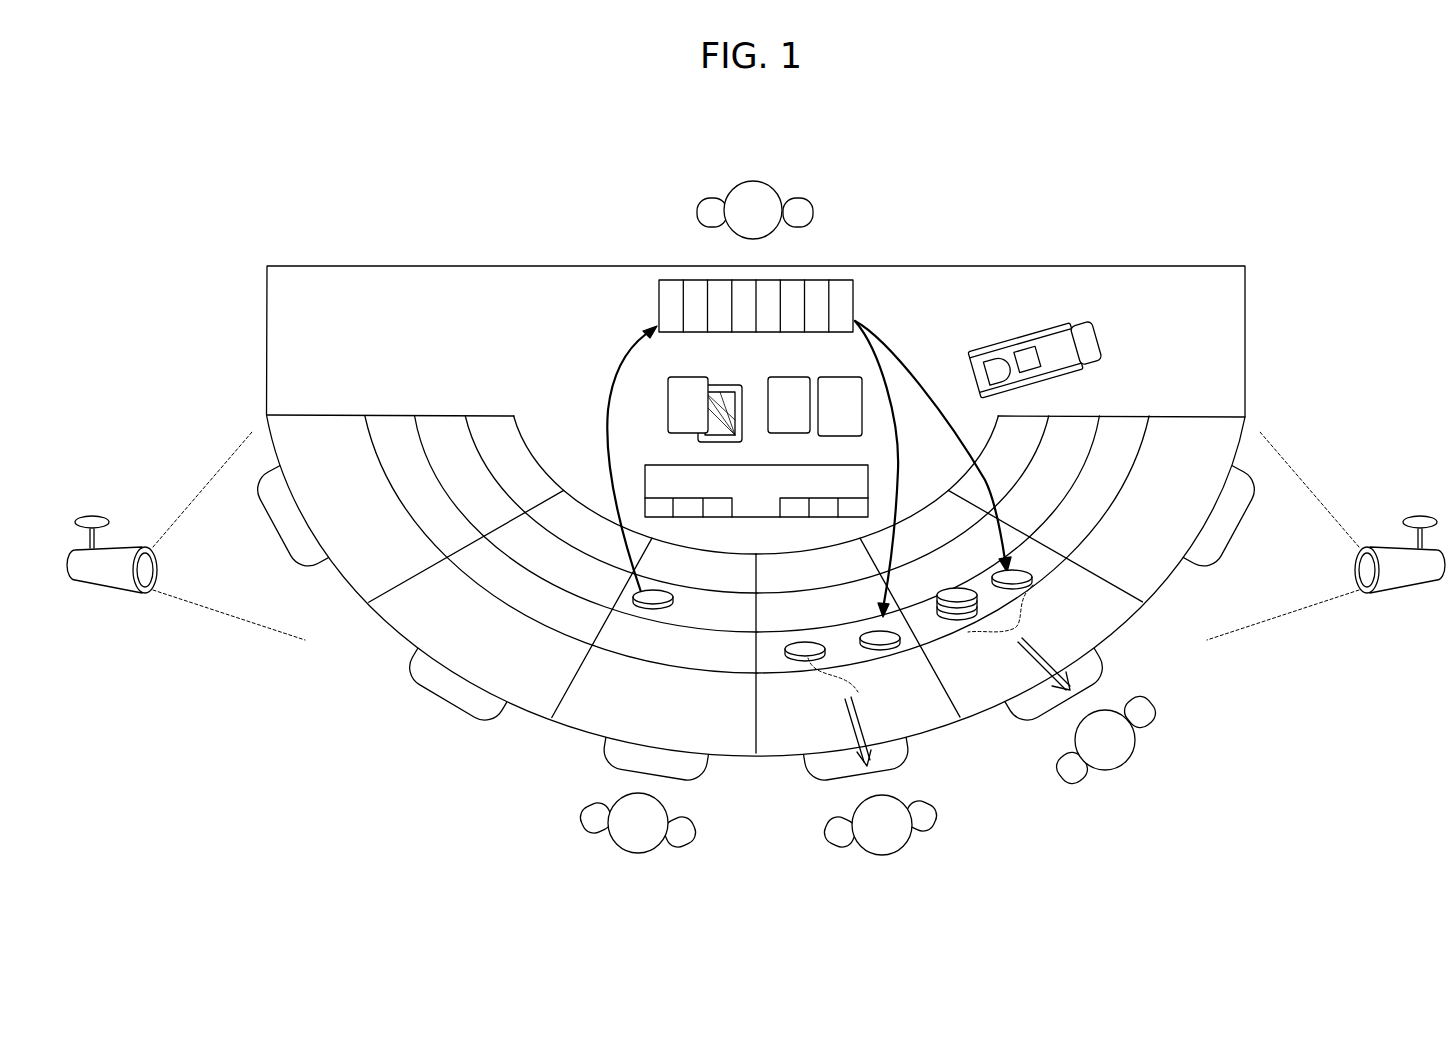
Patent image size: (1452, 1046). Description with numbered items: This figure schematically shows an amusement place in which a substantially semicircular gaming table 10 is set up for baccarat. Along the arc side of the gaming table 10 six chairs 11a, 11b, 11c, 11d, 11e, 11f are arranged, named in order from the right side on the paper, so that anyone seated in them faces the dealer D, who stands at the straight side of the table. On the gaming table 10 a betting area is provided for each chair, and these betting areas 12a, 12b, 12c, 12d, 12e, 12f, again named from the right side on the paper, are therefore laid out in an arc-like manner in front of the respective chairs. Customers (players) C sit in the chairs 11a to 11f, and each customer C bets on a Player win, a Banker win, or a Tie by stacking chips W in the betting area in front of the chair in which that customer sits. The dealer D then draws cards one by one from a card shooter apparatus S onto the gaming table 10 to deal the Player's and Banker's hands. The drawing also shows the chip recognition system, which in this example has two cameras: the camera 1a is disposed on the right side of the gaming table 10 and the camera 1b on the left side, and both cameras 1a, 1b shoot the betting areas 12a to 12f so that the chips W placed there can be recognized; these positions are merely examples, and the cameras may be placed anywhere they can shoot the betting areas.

The gaming table 10 is at (1248, 329).
The chair 11a is at (1232, 525).
The chair 11b is at (1105, 660).
The chair 11c is at (902, 752).
The chair 11d is at (605, 755).
The chair 11e is at (415, 660).
The chair 11f is at (280, 532).
The betting area 12a is at (1080, 415).
The betting area 12b is at (912, 506).
The betting area 12c is at (820, 546).
The betting area 12d is at (680, 546).
The betting area 12e is at (586, 498).
The betting area 12f is at (487, 414).
The camera 1a is at (1367, 547).
The camera 1b is at (103, 578).
The dealer D is at (780, 190).
The customer (player) C is at (598, 824).
The card shooter apparatus S is at (1057, 340).
The chips W is at (797, 660).